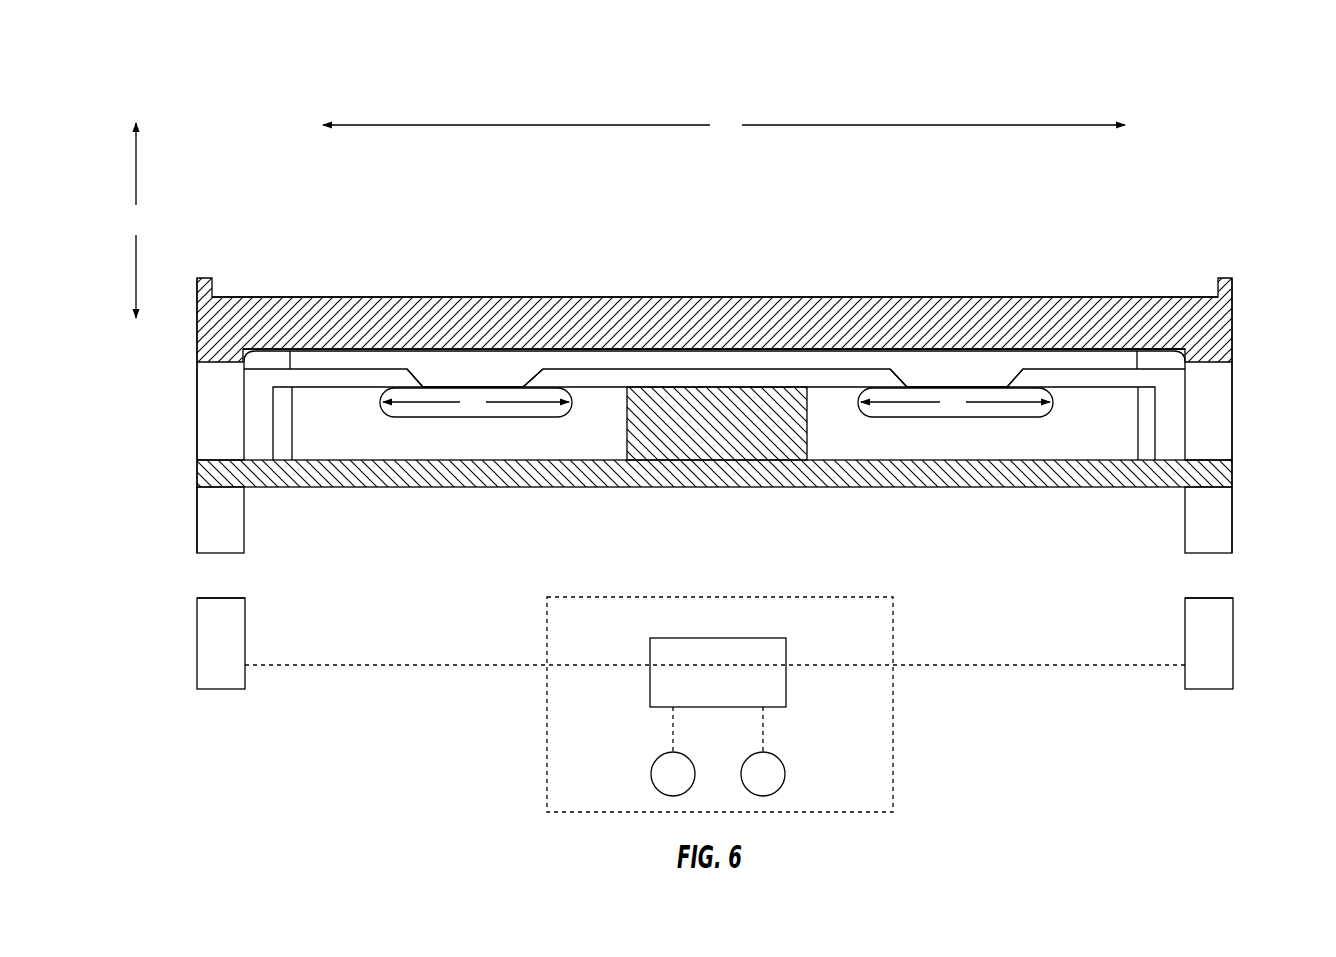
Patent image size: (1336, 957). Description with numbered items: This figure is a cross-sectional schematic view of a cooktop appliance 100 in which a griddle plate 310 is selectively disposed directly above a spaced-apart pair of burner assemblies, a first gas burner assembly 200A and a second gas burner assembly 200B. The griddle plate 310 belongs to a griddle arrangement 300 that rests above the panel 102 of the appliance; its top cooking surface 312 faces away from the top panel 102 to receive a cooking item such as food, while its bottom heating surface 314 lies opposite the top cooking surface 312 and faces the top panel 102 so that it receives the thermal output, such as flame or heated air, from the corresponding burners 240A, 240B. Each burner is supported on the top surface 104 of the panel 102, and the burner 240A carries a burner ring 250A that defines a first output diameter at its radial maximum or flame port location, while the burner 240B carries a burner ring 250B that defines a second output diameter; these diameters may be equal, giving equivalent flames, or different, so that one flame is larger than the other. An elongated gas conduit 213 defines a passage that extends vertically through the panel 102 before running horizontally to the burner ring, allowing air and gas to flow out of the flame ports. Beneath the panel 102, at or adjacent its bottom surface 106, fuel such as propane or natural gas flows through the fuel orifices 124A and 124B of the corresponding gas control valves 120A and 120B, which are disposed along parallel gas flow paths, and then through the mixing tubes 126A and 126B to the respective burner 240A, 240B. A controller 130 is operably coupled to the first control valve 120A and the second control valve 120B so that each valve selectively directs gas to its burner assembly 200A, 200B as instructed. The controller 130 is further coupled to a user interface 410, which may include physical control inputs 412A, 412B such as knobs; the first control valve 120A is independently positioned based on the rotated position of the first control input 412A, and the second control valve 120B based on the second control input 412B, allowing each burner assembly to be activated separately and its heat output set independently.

The cooktop appliance 100 is at (1193, 152).
The panel 102 is at (197, 475).
The top surface 104 is at (347, 458).
The bottom surface 106 is at (425, 487).
The first control valve 120A is at (246, 625).
The second control valve 120B is at (1183, 628).
The first fuel orifice 124A is at (220, 590).
The second fuel orifice 124B is at (1210, 597).
The first mixing tube 126A is at (246, 528).
The second mixing tube 126B is at (1183, 523).
The controller 130 is at (735, 685).
The first gas burner assembly 200A is at (238, 415).
The second gas burner assembly 200B is at (1200, 423).
The elongated gas conduit 213 is at (323, 383).
The first burner 240A is at (453, 385).
The second burner 240B is at (963, 387).
The first burner ring 250A is at (570, 402).
The second burner ring 250B is at (860, 402).
The cover plate 300 is at (1235, 273).
The griddle plate 310 is at (890, 303).
The top cooking surface 312 is at (663, 297).
The bottom heating surface 314 is at (712, 352).
The user interface 410 is at (600, 597).
The first control input 412A is at (651, 772).
The second control input 412B is at (785, 772).